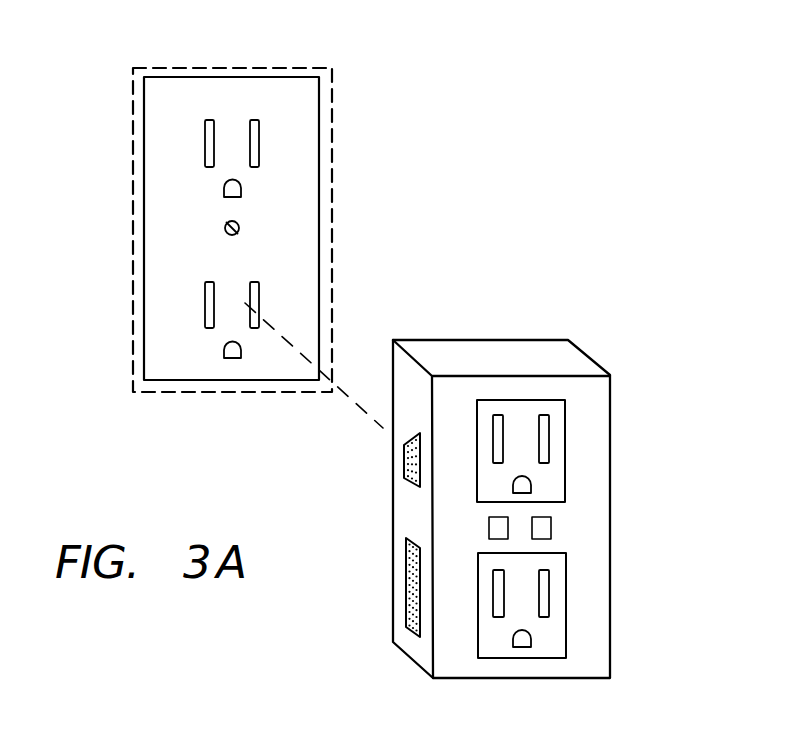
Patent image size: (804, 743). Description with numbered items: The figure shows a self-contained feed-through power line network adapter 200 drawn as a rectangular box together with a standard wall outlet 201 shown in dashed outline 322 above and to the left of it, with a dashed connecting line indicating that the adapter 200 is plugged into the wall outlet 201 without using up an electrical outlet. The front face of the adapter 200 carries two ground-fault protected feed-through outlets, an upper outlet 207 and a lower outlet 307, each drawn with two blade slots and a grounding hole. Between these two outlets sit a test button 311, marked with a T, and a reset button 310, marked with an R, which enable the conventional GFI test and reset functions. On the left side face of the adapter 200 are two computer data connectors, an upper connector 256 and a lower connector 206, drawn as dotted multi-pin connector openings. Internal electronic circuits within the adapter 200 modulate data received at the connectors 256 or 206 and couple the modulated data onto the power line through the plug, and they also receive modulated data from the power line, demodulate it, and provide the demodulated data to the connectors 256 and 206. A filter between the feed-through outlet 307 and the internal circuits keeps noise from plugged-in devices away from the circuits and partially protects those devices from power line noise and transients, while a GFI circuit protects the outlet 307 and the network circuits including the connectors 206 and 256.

The adapter 200 is at (450, 340).
The standard wall outlet 201 is at (238, 77).
The computer data connector 206 is at (406, 605).
The upper duplex receptacle outlet 207 is at (558, 450).
The computer data connector 256 is at (404, 460).
The GFI-protected feed-through outlet 307 is at (555, 627).
The reset button 310 is at (553, 528).
The test button 311 is at (489, 530).
The dashed outline of face plate region 322 is at (332, 135).